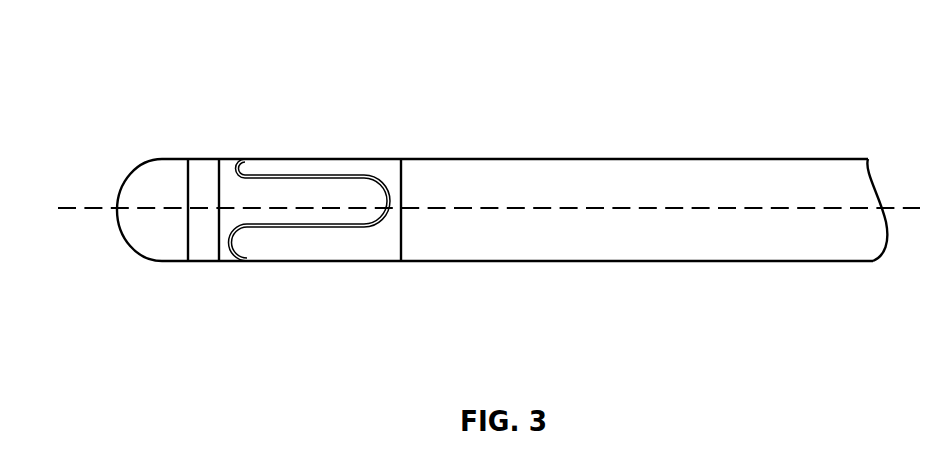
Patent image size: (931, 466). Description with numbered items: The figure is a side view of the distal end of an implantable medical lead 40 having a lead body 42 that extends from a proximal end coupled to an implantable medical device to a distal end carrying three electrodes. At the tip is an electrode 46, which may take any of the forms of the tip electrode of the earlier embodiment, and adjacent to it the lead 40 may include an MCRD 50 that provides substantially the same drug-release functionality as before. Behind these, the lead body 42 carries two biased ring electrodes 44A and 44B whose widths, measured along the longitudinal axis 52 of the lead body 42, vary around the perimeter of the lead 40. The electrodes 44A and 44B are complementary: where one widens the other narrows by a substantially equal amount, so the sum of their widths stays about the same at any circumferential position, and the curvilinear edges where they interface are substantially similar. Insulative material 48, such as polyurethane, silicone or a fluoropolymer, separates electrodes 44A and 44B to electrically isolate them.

The implantable medical lead 40 is at (480, 82).
The lead body 42 is at (705, 158).
The biased ring electrode 44A is at (335, 158).
The biased ring electrode 44B is at (232, 158).
The electrode 46 is at (118, 178).
The insulative material 48 is at (247, 263).
The MCRD 50 is at (202, 263).
The longitudinal axis 52 is at (813, 209).